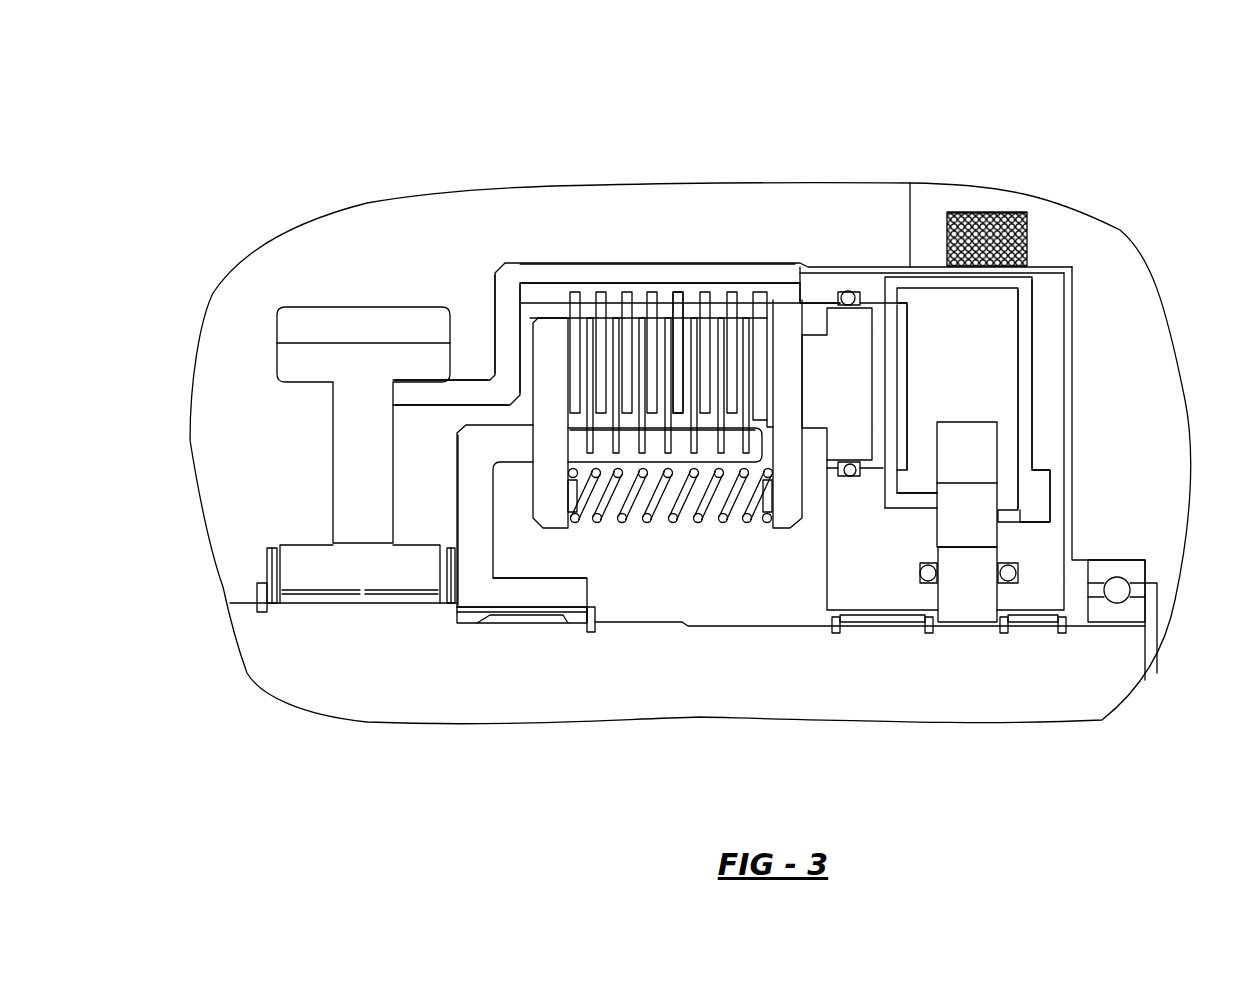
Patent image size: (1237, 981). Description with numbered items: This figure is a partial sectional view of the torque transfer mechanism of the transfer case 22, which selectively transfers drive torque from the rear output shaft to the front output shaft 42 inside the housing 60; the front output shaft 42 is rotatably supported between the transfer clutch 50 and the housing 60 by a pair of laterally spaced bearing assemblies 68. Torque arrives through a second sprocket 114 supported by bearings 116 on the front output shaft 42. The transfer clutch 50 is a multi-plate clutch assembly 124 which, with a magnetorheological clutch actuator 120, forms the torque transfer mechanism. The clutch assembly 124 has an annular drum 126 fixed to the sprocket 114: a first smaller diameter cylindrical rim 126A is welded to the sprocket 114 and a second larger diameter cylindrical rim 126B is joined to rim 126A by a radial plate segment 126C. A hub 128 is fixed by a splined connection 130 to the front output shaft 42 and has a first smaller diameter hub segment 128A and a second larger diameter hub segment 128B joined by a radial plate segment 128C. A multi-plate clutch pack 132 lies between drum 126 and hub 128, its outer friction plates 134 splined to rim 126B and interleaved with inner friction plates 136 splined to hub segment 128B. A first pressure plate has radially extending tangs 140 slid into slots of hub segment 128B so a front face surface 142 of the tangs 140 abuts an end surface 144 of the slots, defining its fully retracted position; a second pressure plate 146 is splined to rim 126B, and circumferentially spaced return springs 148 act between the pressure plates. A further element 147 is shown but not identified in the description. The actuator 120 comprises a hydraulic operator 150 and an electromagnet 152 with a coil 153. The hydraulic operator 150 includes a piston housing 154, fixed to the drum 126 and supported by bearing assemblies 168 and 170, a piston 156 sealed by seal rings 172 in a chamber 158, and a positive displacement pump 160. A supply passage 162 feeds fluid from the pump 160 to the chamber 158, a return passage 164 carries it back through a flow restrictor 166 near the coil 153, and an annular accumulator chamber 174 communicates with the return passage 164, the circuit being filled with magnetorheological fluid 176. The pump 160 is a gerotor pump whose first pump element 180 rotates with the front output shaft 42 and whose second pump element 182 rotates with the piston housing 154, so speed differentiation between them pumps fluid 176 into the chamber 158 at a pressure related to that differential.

The transfer case 22 is at (978, 108).
The front output shaft 42 is at (277, 648).
The transfer clutch 50 is at (727, 607).
The housing 60 is at (1163, 530).
The bearing assemblies 68 is at (1133, 572).
The second sprocket 114 is at (353, 458).
The bearings 116 is at (318, 595).
The magnetorheological clutch actuator 120 is at (866, 212).
The multi-plate clutch assembly 124 is at (618, 248).
The annular drum 126 is at (696, 271).
The first smaller diameter cylindrical rim 126A is at (423, 390).
The second larger diameter cylindrical rim 126B is at (553, 277).
The radial plate segment 126C is at (508, 368).
The hub 128 is at (491, 523).
The first smaller diameter hub segment 128A is at (522, 600).
The second larger diameter hub segment 128B is at (600, 450).
The radial plate segment 128C is at (473, 510).
The splined connection 130 is at (518, 618).
The multi-plate clutch pack 132 is at (678, 295).
The outer friction plates 134 is at (583, 312).
The inner friction plates 136 is at (587, 425).
The tangs 140 is at (540, 480).
The front face surface 142 is at (541, 452).
The end surface 144 is at (540, 445).
The second pressure plate 146 is at (790, 497).
The end post 147 is at (760, 300).
The return springs 148 is at (697, 520).
The hydraulic operator 150 is at (832, 258).
The electromagnet 152 is at (980, 213).
The coil 153 is at (1012, 223).
The piston housing 154 is at (1048, 317).
The piston 156 is at (870, 456).
The chamber 158 is at (900, 368).
The positive displacement pump 160 is at (967, 608).
The supply passage 162 is at (902, 502).
The return passage 164 is at (1025, 382).
The flow restrictor 166 is at (983, 288).
The bearing assembly 168 is at (862, 618).
The bearing assembly 170 is at (1035, 617).
The seal rings 172 is at (848, 298).
The annular accumulator chamber 174 is at (505, 515).
The magnetorheological fluid 176 is at (890, 407).
The first pump element 180 is at (967, 584).
The second pump element 182 is at (967, 484).